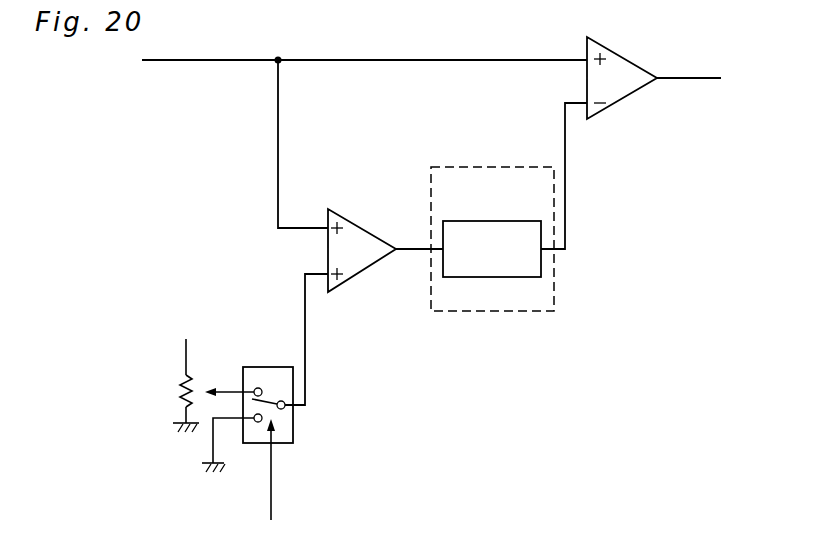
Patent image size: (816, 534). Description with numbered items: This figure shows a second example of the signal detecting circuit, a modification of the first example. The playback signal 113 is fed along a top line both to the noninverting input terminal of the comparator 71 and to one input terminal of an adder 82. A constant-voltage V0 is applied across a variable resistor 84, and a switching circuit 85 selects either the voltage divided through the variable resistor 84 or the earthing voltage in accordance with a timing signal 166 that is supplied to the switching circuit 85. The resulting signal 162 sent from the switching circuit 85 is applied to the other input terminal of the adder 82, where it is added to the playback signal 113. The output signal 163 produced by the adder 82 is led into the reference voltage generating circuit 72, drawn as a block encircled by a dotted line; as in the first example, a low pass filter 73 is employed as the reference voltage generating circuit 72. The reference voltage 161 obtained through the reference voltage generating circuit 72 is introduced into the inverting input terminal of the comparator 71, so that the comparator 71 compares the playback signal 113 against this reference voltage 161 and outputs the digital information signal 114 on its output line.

The playback signal 113 is at (222, 60).
The comparator 71 is at (620, 56).
The digital information signal 114 is at (690, 78).
The adder 82 is at (366, 228).
The low pass filter 73 is at (482, 221).
The reference voltage generating circuit 72 is at (514, 311).
The reference voltage 161 is at (565, 192).
The output signal 163 is at (412, 250).
The signal 162 is at (306, 353).
The variable resistor 84 is at (185, 392).
The switching circuit 85 is at (293, 428).
The timing signal 166 is at (271, 488).